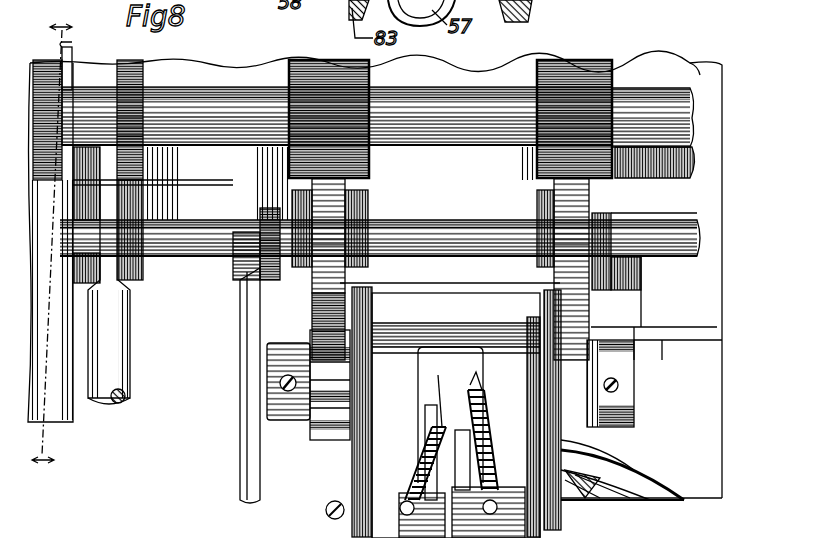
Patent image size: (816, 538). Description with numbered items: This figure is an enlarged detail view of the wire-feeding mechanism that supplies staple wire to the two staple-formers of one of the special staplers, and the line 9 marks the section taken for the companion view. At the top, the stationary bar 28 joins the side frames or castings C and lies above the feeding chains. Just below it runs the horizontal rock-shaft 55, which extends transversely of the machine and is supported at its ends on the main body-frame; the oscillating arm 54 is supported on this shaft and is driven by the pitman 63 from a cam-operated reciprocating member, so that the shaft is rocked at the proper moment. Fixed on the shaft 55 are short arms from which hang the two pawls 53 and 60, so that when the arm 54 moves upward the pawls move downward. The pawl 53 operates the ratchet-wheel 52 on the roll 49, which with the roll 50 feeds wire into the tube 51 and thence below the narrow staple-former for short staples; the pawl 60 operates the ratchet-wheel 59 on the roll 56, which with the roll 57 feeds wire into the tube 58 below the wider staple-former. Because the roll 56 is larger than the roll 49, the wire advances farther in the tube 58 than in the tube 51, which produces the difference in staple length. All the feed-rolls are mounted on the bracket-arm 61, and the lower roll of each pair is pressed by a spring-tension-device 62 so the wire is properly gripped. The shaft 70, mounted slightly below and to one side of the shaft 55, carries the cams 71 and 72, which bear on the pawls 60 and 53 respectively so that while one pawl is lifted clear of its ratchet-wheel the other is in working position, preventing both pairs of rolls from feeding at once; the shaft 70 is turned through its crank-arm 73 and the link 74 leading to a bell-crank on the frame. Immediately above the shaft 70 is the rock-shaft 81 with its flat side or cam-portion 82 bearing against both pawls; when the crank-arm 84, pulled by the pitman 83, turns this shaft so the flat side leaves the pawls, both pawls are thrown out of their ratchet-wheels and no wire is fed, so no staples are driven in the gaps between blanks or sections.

The stationary bar 28 is at (193, 70).
The rock-shaft 55 is at (670, 107).
The flat side or cam-portion 82 is at (676, 166).
The rock-shaft 81 is at (694, 180).
The oscillating arm 54 is at (133, 166).
The crank-arm 84 is at (63, 200).
The pawl 60 is at (318, 296).
The cam 71 is at (352, 213).
The shaft 70 is at (489, 232).
The cam 72 is at (545, 264).
The pawl 53 is at (581, 277).
The ratchet-wheel 52 is at (634, 347).
The bracket-arm 61 is at (654, 357).
The crank-arm 73 is at (233, 287).
The link 74 is at (248, 475).
The pitman 83 is at (58, 323).
The pitman 63 is at (133, 385).
The ratchet-wheel 59 is at (267, 372).
The roll 56 is at (350, 400).
The spring-tension-devices 62 is at (449, 427).
The roll 57 is at (330, 522).
The roll 49 is at (634, 373).
The tube 58 is at (594, 450).
The roll 50 is at (564, 490).
The tube 51 is at (621, 490).
The section line 9 is at (52, 246).
The side frames or castings C is at (73, 47).